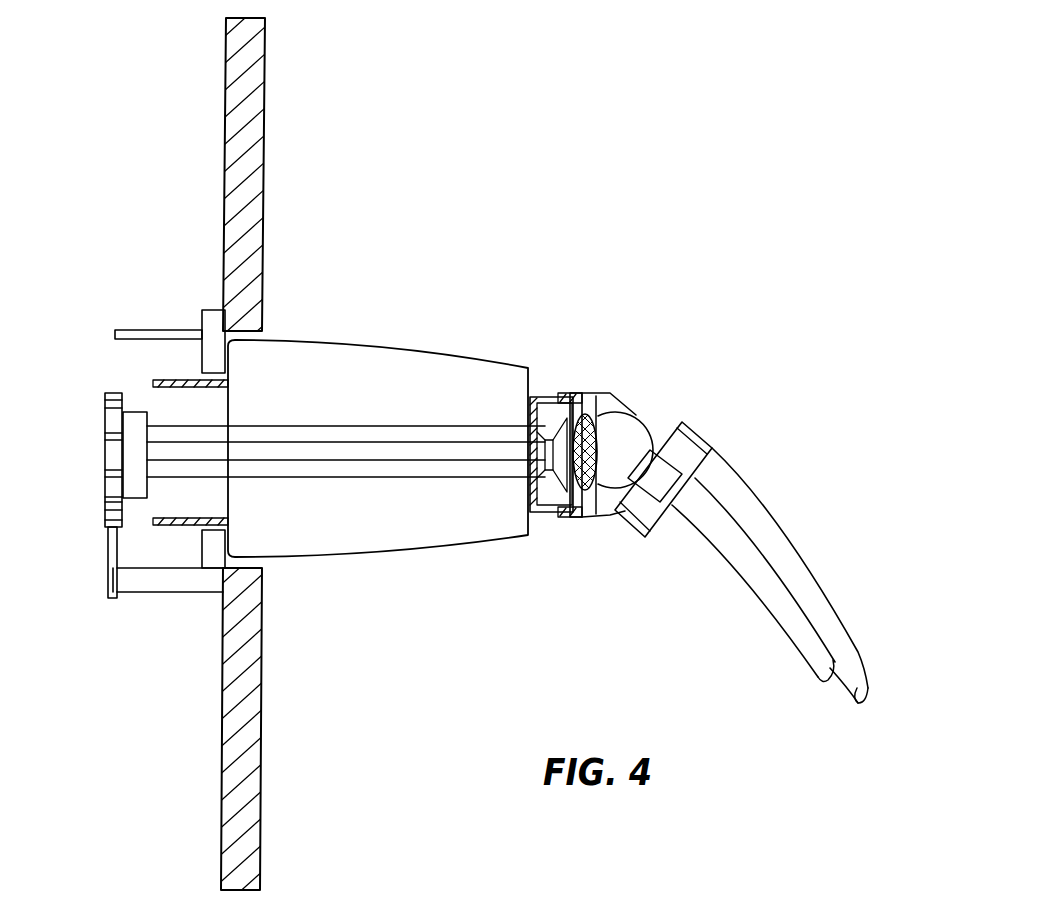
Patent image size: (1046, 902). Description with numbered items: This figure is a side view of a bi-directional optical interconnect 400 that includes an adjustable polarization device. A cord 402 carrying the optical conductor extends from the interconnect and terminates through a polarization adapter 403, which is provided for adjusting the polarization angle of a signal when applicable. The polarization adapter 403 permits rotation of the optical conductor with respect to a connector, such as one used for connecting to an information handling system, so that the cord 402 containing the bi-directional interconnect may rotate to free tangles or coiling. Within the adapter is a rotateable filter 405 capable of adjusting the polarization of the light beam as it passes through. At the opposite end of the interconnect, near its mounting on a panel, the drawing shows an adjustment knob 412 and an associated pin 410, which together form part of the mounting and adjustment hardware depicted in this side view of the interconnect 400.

The shower head assembly 400 is at (578, 141).
The supply tubes 402 is at (808, 613).
The polarization adapter 403 is at (720, 391).
The rotateable filter 405 is at (591, 398).
The locking pin 410 is at (104, 492).
The adjustment knob 412 is at (135, 410).